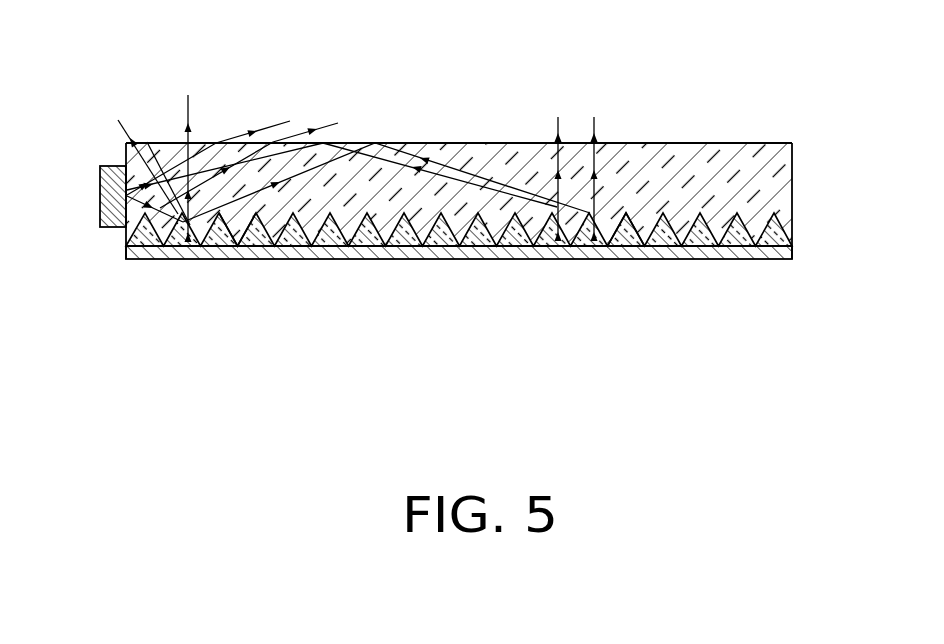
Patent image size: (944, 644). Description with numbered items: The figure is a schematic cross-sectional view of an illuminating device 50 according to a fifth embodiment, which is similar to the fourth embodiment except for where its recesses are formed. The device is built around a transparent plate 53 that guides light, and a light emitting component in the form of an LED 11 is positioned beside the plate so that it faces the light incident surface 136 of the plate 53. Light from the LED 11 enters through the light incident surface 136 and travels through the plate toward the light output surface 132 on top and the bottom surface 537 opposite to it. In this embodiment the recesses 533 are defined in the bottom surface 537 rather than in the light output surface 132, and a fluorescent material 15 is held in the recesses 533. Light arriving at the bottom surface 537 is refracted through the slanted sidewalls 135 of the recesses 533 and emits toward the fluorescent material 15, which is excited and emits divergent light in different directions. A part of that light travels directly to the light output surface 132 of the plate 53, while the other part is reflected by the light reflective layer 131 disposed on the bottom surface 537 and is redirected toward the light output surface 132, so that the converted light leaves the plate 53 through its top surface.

The illuminating device 50 is at (449, 194).
The LED 11 is at (113, 197).
The plate 53 is at (468, 214).
The light output surface 132 is at (753, 143).
The light incident surface 136 is at (126, 153).
The light reflective layer 131 is at (782, 253).
The slanted sidewall 135 is at (642, 247).
The fluorescent material 15 is at (626, 220).
The recesses 533 is at (617, 247).
The bottom surface 537 is at (237, 247).